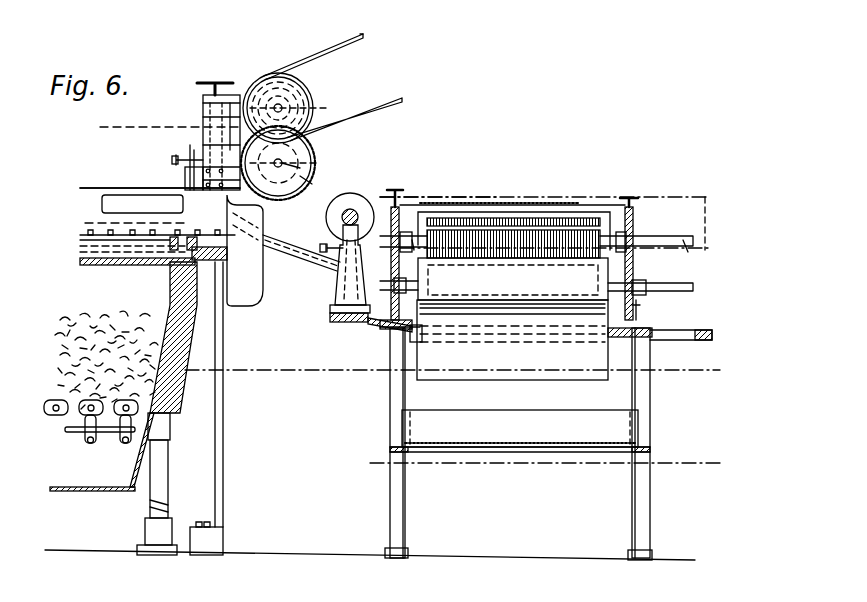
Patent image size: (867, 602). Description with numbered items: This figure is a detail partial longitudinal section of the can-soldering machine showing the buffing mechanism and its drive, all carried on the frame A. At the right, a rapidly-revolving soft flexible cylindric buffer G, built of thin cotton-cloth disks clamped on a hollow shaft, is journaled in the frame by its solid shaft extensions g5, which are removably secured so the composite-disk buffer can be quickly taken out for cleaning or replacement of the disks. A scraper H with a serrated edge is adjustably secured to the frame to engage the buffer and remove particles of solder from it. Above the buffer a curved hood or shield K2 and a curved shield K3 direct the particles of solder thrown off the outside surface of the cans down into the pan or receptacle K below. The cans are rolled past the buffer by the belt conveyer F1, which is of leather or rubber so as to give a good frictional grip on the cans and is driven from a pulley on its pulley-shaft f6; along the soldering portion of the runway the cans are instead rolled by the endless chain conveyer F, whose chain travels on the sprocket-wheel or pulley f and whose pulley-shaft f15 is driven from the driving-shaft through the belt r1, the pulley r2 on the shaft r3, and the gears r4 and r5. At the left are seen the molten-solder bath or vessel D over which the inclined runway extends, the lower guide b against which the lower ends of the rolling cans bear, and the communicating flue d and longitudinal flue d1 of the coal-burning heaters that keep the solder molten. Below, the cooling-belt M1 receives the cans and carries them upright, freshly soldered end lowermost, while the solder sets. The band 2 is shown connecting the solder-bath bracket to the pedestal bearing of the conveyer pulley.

The endless conveyer F is at (135, 125).
The endless conveyer F1 is at (480, 195).
The belt r1 is at (345, 36).
The pulley r2 is at (298, 76).
The shaft r3 is at (284, 108).
The gear r4 is at (305, 94).
The gear r5 is at (300, 157).
The sprocket-wheel or pulley f is at (312, 184).
The pulley-shaft f15 is at (300, 168).
The pulley-shaft f6 is at (296, 252).
The band 2 is at (305, 225).
The communicating flue d is at (232, 250).
The longitudinal flue d1 is at (160, 201).
The lower guide b is at (90, 230).
The molten-solder bath or vessel D is at (141, 264).
The cooling-belt M1 is at (290, 370).
The frame A is at (223, 418).
The curved hood or shield K2 is at (520, 205).
The curved shield K3 is at (513, 279).
The pan or receptacle K is at (520, 376).
The cylindric buffer G is at (575, 215).
The scraper H is at (610, 215).
The solid shaft extension g5 is at (546, 253).